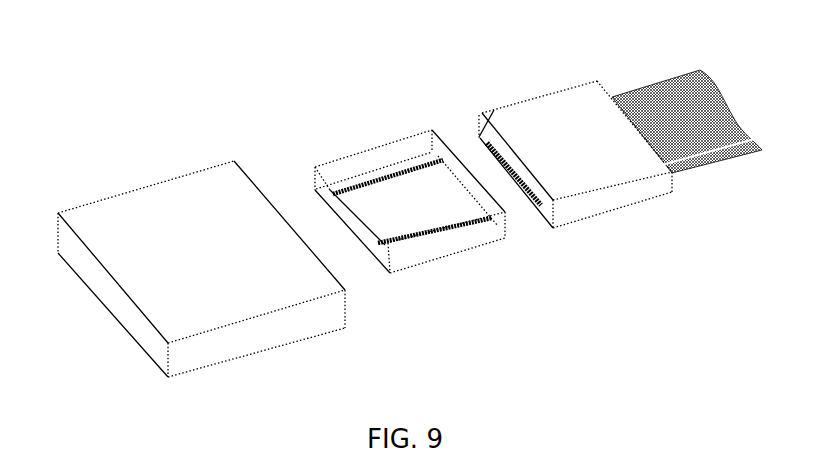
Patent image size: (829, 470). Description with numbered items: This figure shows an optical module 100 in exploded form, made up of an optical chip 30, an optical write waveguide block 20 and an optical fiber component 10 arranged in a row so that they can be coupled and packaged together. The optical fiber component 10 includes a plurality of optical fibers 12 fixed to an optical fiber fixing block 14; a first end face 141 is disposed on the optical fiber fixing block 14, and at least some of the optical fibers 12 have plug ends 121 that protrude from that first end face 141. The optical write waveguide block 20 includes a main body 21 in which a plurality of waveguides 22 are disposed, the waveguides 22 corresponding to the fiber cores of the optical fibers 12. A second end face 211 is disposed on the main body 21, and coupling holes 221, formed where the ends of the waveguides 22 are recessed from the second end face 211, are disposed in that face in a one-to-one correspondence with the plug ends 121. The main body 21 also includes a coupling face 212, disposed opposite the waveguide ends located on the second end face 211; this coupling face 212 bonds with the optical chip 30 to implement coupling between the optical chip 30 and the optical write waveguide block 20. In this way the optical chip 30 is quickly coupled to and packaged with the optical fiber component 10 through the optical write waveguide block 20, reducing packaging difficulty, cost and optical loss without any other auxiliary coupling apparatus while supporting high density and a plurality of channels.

The optical module 100 is at (325, 42).
The optical chip 30 is at (220, 203).
The optical write waveguide block 20 is at (426, 194).
The main body 21 is at (410, 186).
The second end face 211 is at (447, 143).
The coupling face 212 is at (362, 233).
The waveguides 22 is at (439, 236).
The coupling holes 221 is at (510, 212).
The optical fiber component 10 is at (607, 156).
The first end face 141 is at (493, 114).
The plug ends 121 is at (537, 223).
The optical fiber fixing block 14 is at (617, 176).
The optical fibers 12 is at (684, 170).